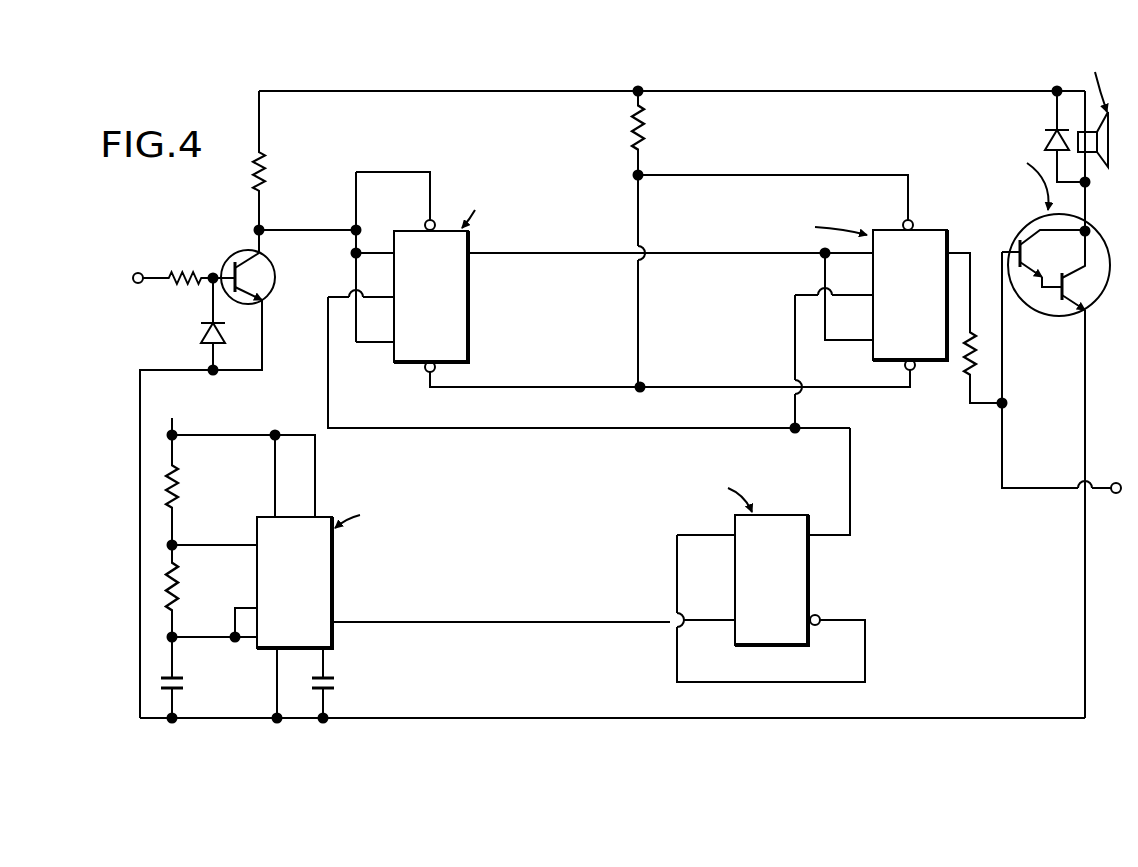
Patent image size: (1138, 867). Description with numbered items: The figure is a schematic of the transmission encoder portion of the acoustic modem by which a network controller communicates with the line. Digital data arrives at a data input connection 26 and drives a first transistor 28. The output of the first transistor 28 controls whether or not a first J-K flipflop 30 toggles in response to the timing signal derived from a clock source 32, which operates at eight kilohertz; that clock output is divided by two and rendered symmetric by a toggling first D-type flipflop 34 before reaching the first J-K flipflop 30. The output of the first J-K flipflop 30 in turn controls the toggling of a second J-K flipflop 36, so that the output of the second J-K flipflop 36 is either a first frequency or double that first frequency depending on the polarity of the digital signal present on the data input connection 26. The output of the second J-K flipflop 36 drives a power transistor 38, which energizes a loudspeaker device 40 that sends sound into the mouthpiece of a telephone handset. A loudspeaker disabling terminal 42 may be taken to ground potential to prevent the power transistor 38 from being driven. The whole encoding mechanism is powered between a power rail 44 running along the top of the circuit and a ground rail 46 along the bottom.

The data input connection 26 is at (138, 265).
The first transistor 28 is at (267, 268).
The first J-K flipflop 30 is at (462, 328).
The clock source 32 is at (323, 593).
The first D-type flipflop 34 is at (803, 580).
The second J-K flipflop 36 is at (893, 231).
The power transistor 38 is at (1027, 230).
The loudspeaker device 40 is at (1106, 124).
The loudspeaker disabling terminal 42 is at (1113, 493).
The power rail 44 is at (855, 92).
The ground rail 46 is at (540, 717).